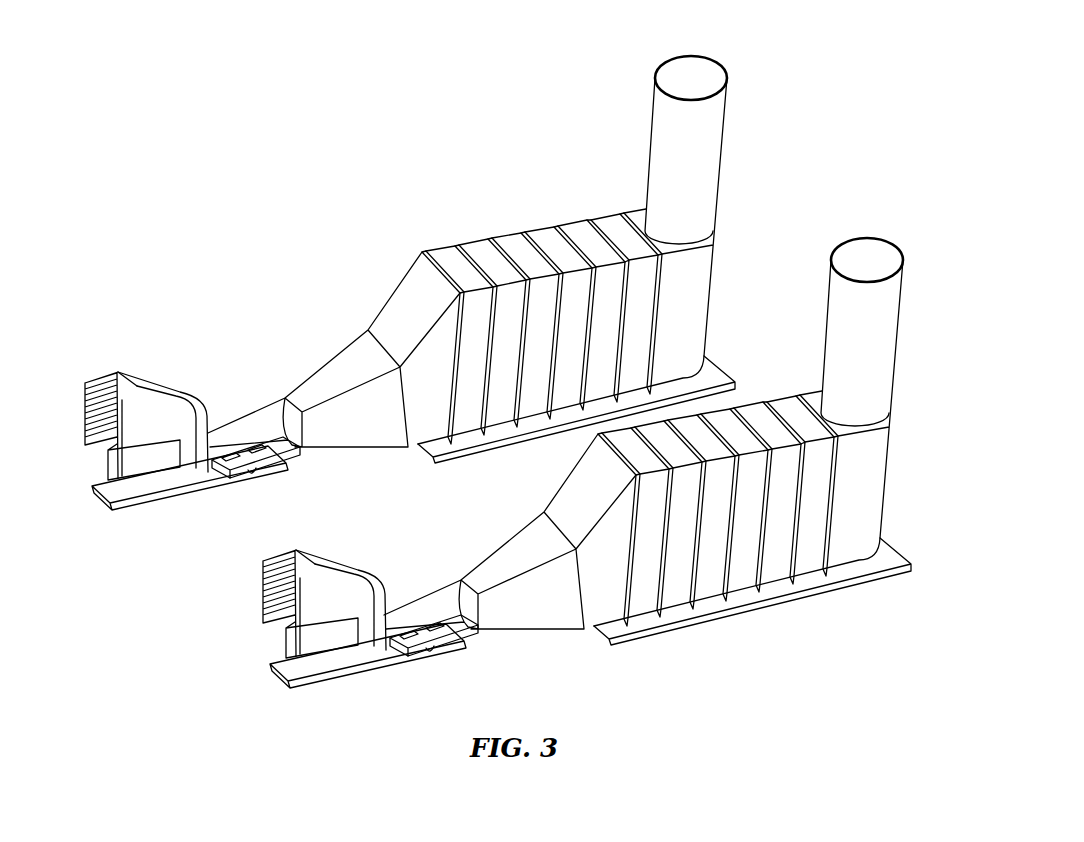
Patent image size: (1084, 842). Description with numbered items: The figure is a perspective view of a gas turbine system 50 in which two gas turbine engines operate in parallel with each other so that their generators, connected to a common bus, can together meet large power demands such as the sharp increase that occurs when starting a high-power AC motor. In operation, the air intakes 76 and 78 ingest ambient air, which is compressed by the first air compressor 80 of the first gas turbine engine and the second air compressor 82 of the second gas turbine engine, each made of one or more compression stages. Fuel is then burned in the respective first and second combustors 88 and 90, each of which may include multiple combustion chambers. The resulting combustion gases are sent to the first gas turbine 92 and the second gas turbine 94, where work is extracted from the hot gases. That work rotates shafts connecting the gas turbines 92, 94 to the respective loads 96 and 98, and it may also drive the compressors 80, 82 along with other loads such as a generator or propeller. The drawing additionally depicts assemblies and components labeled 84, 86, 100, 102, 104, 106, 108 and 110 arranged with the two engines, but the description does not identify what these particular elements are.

The gas turbine system 50 is at (501, 384).
The air intake 76 is at (266, 575).
The air intake 78 is at (88, 397).
The first air compressor 80 is at (428, 646).
The second air compressor 82 is at (217, 462).
The first connector assembly 84 is at (348, 613).
The second connector assembly 86 is at (170, 435).
The first combustor 88 is at (395, 640).
The second combustor 90 is at (250, 468).
The first gas turbine 92 is at (437, 587).
The second gas turbine 94 is at (259, 409).
The load 96 is at (290, 640).
The load 98 is at (112, 462).
The heat sink base 100 is at (657, 425).
The heat sink 102 is at (687, 350).
The first fin array 104 is at (717, 412).
The second fin array 106 is at (537, 227).
The first heat pipe 108 is at (898, 352).
The second heat pipe 110 is at (719, 172).